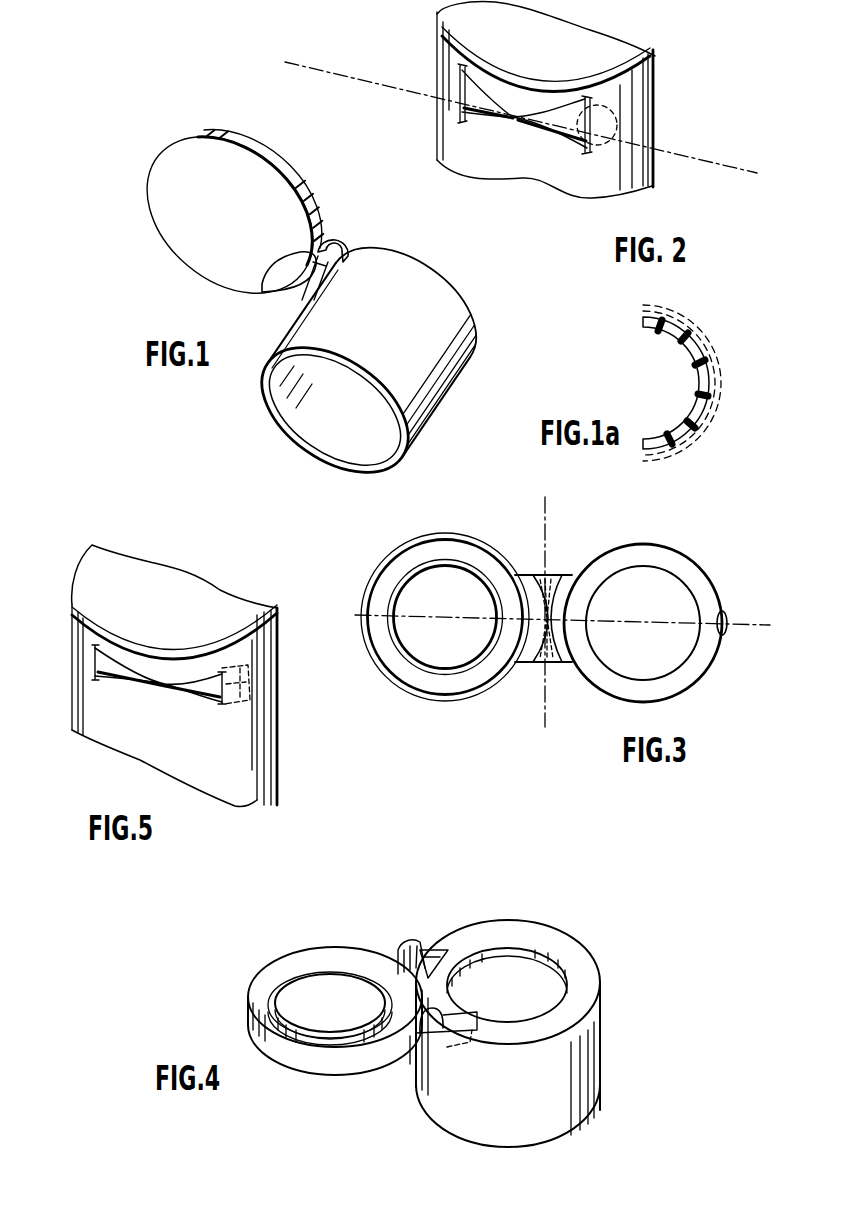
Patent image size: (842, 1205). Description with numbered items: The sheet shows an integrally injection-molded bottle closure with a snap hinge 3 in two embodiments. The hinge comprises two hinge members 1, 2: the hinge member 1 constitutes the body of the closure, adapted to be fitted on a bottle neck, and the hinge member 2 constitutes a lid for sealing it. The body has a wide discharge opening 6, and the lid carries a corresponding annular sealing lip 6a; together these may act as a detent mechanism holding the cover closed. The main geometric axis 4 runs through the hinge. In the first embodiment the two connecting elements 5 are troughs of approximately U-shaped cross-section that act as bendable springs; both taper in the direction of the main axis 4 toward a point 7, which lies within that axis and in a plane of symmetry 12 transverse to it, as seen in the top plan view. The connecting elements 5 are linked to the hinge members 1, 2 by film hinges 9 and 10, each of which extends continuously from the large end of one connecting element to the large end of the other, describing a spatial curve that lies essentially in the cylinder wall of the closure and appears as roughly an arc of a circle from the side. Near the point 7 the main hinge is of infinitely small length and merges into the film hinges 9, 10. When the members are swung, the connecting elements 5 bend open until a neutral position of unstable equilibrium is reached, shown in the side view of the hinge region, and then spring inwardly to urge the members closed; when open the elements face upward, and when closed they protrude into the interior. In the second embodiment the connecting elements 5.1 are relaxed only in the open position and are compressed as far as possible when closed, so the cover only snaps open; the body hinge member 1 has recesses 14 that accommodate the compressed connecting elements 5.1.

In FIG. 1, the hinge member 1 is at (462, 368).
In FIG. 2, the hinge member 1 is at (640, 170).
In FIG. 3, the hinge member 1 is at (702, 584).
In FIG. 5, the hinge member 1 is at (92, 722).
In FIG. 4, the hinge member 1 is at (586, 1082).
In FIG. 1, the hinge member 2 is at (165, 182).
In FIG. 2, the hinge member 2 is at (650, 76).
In FIG. 3, the hinge member 2 is at (400, 570).
In FIG. 5, the hinge member 2 is at (178, 600).
In FIG. 4, the hinge member 2 is at (358, 1070).
In FIG. 1, the snap hinge 3 is at (349, 192).
In FIG. 3, the snap hinge 3 is at (539, 550).
In FIG. 2, the main geometric axis 4 is at (700, 157).
In FIG. 3, the main geometric axis 4 is at (548, 522).
In FIG. 1, the connecting elements 5 is at (344, 236).
In FIG. 2, the connecting elements 5 is at (460, 117).
In FIG. 1a, the connecting elements 5 is at (694, 377).
In FIG. 3, the connecting elements 5 is at (541, 662).
In FIG. 5, the connecting elements 5.1 is at (95, 673).
In FIG. 4, the connecting elements 5.1 is at (402, 945).
In FIG. 3, the discharge opening 6 is at (662, 576).
In FIG. 4, the discharge opening 6 is at (535, 958).
In FIG. 3, the annular sealing lip 6a is at (413, 660).
In FIG. 4, the annular sealing lip 6a is at (305, 988).
In FIG. 2, the point 7 is at (515, 120).
In FIG. 3, the point 7 is at (550, 618).
In FIG. 1, the film hinge 9 is at (334, 268).
In FIG. 2, the film hinge 9 is at (480, 124).
In FIG. 3, the film hinge 9 is at (552, 664).
In FIG. 1, the film hinge 10 is at (290, 288).
In FIG. 2, the film hinge 10 is at (478, 82).
In FIG. 3, the film hinge 10 is at (522, 665).
In FIG. 3, the plane of symmetry 12 is at (730, 622).
In FIG. 5, the recesses 14 is at (232, 706).
In FIG. 4, the recesses 14 is at (430, 948).